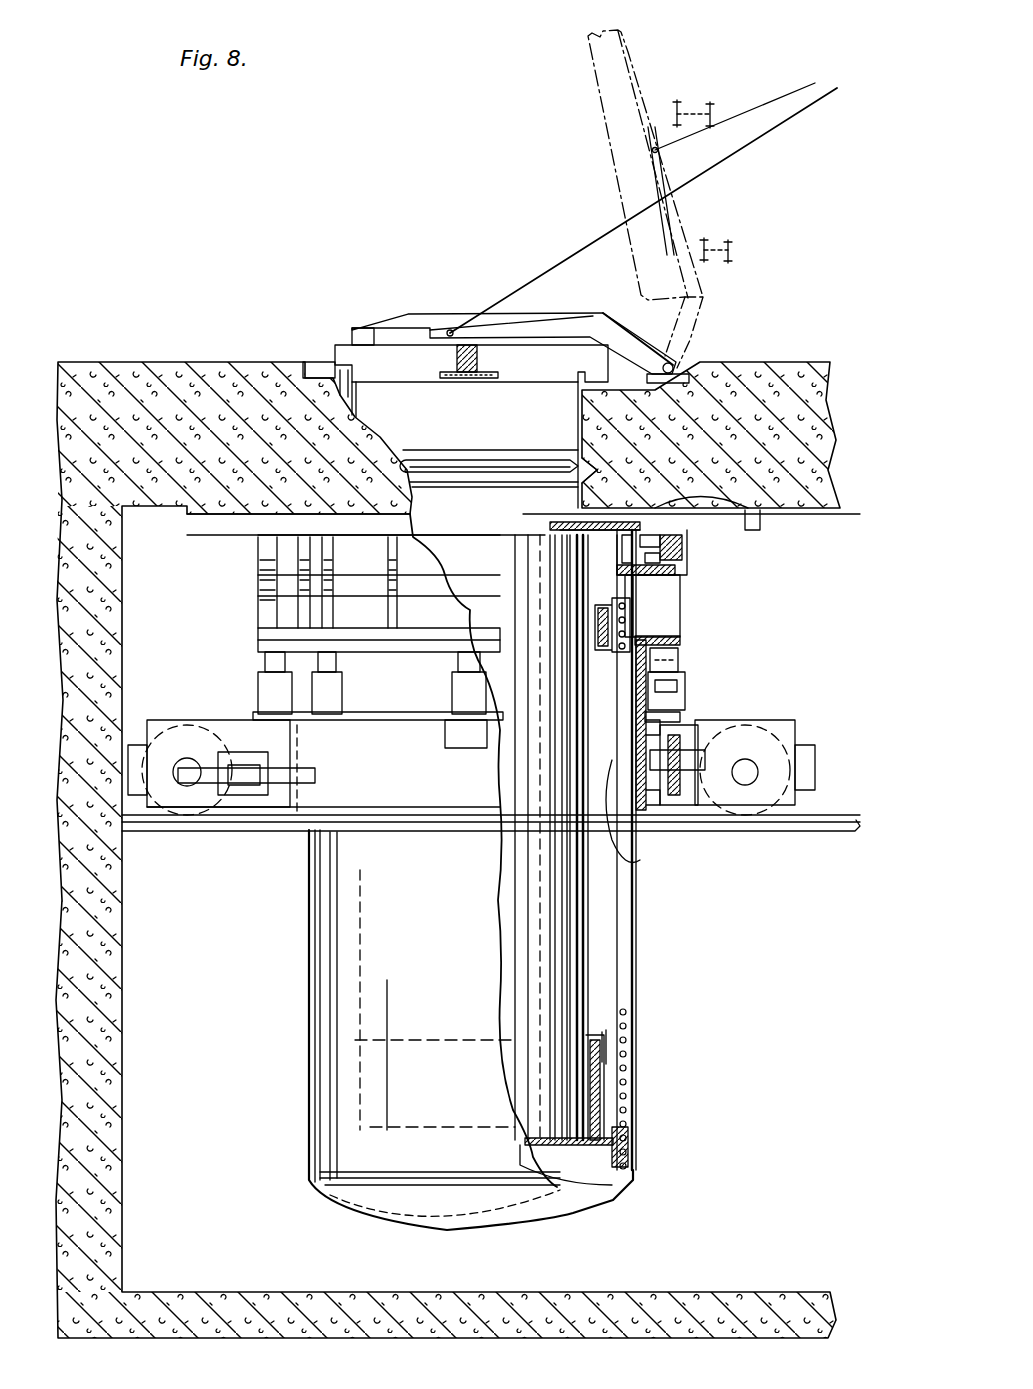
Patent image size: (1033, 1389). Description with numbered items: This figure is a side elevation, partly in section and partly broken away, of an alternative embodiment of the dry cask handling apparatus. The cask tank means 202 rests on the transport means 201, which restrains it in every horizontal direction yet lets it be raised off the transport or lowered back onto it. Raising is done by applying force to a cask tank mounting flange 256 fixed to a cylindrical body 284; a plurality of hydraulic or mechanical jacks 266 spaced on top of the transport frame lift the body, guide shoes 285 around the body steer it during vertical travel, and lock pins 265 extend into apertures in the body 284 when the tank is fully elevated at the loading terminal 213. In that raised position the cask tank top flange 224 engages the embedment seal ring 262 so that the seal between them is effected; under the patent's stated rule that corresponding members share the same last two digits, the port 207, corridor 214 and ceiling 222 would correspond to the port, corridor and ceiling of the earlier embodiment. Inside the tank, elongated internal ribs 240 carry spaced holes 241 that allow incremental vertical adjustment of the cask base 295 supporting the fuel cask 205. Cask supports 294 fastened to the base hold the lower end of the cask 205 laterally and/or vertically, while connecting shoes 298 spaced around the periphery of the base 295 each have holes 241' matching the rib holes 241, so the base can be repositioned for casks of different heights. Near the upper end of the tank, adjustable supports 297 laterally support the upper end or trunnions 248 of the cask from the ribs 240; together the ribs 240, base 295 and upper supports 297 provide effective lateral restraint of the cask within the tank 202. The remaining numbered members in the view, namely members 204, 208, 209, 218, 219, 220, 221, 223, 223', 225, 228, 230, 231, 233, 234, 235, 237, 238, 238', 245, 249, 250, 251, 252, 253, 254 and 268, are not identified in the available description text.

The transport means 201 is at (426, 799).
The cask tank means 202 is at (305, 920).
The lid assembly 204 is at (499, 273).
The fuel cask 205 is at (588, 938).
The frame 207 is at (522, 423).
The lid 208 is at (417, 312).
The cover unit 209 is at (522, 166).
The loading terminal 213 is at (379, 1264).
The lower housing region 214 is at (804, 1024).
The carrier block 218 is at (245, 752).
The shaft 219 is at (290, 792).
The support plate 220 is at (455, 730).
The bracket 221 is at (470, 750).
The concrete ground 222 is at (834, 458).
The roller unit 223 is at (216, 743).
The roller unit 223' is at (798, 767).
The cask tank top flange 224 is at (645, 538).
The outer wall 225 is at (636, 985).
The groove 228 is at (582, 432).
The bearing 230 is at (240, 795).
The stop plate 231 is at (138, 798).
The lid clips 233 is at (748, 238).
The hinge arm 234 is at (626, 326).
The prop rod 235 is at (598, 248).
The socket 237 is at (348, 392).
The lid seat 238 is at (369, 315).
The frame flange 238' is at (291, 340).
The elongated internal ribs 240 is at (628, 1046).
The spaced holes 241 is at (673, 1089).
The holes 241' is at (622, 1200).
The spacer 245 is at (680, 556).
The trunnions 248 is at (684, 658).
The retainer 249 is at (695, 558).
The tab 250 is at (752, 512).
The housing 251 is at (680, 590).
The mounting plate 252 is at (562, 513).
The gasket 253 is at (666, 572).
The chamber 254 is at (439, 500).
The cask tank mounting flange 256 is at (258, 630).
The embedment seal ring 262 is at (682, 530).
The lock pins 265 is at (700, 762).
The jacks 266 is at (345, 690).
The rod 268 is at (468, 474).
The cylindrical body 284 is at (636, 792).
The guide shoes 285 is at (612, 795).
The cask supports 294 is at (600, 1105).
The cask base 295 is at (572, 1172).
The adjustable supports 297 is at (638, 623).
The connecting shoes 298 is at (630, 1158).